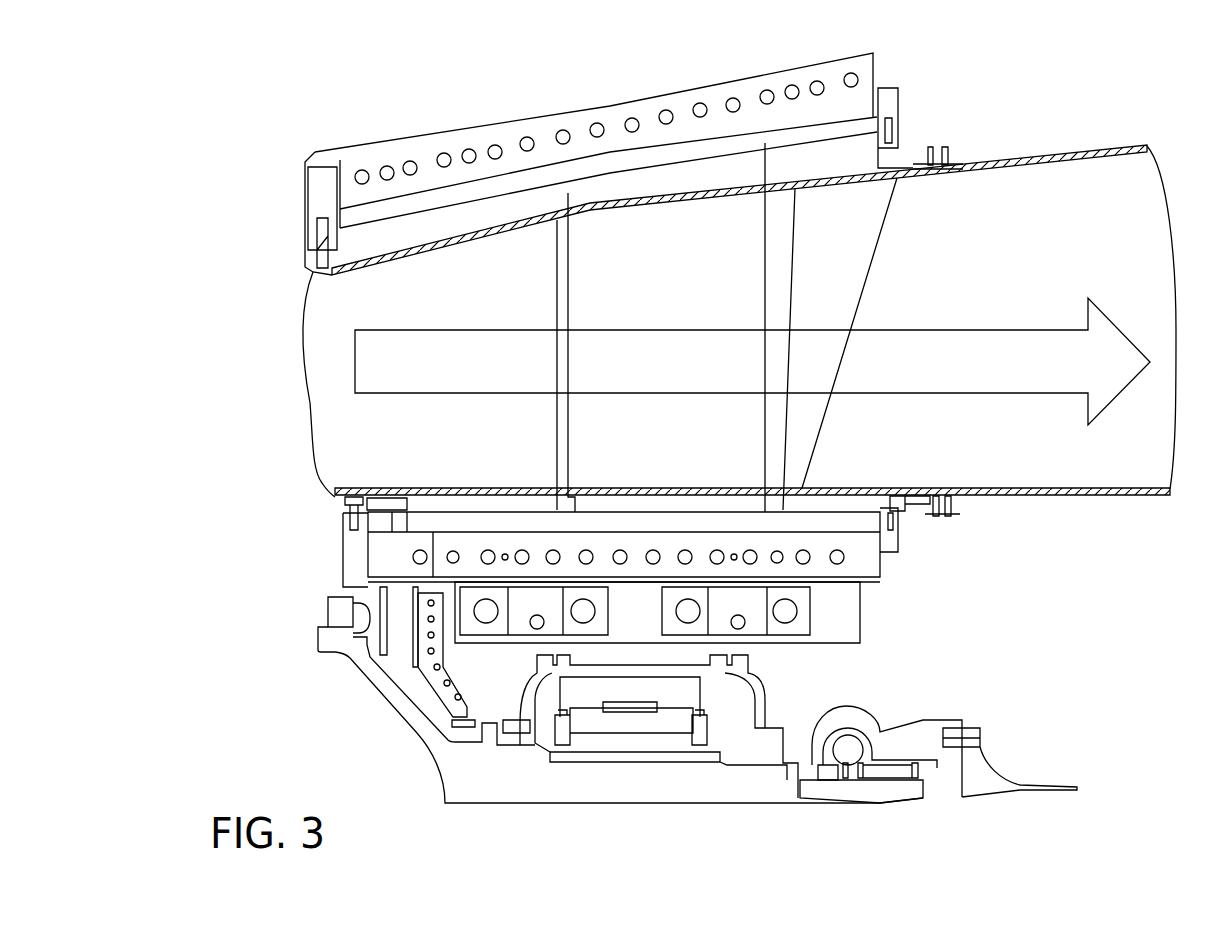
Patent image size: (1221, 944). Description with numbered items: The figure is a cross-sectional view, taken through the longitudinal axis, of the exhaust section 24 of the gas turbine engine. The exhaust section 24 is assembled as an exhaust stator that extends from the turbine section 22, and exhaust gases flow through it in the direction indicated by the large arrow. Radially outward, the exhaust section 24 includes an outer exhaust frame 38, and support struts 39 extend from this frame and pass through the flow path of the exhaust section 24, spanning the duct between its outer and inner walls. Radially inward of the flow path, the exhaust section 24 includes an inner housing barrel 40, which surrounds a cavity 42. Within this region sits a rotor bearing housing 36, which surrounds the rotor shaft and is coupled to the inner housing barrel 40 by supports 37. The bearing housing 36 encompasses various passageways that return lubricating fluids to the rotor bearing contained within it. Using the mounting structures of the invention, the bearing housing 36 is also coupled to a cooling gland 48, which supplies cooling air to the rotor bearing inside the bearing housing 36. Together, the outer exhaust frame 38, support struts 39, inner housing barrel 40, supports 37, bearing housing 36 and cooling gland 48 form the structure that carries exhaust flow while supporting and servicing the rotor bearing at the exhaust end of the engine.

The turbine section 22 is at (635, 788).
The exhaust section 24 is at (276, 304).
The rotor bearing housing 36 is at (765, 688).
The supports 37 is at (727, 603).
The outer exhaust frame 38 is at (615, 157).
The support struts 39 is at (718, 247).
The inner housing barrel 40 is at (833, 520).
The cavity 42 is at (860, 668).
The cooling gland 48 is at (880, 737).